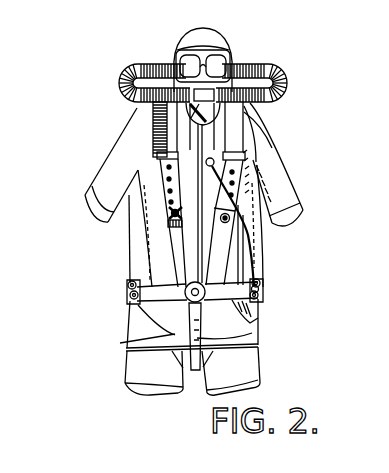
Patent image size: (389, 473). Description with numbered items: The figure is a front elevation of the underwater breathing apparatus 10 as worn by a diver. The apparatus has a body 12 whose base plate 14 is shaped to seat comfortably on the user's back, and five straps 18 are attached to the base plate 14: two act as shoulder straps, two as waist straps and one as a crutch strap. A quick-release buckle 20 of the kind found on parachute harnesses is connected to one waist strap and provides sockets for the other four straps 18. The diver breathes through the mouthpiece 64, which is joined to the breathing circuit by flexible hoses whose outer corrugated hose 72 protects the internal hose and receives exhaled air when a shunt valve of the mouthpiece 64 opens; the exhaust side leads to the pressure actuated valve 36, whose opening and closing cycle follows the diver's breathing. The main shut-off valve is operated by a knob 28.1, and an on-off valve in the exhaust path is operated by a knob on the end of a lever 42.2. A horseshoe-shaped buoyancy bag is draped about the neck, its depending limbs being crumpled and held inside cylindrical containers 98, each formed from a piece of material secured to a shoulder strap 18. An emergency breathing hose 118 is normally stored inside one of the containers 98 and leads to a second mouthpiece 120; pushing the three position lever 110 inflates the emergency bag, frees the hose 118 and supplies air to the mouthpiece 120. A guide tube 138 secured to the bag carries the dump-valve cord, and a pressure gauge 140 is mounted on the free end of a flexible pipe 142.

The breathing apparatus 10 is at (283, 104).
The body 12 is at (268, 254).
The base plate 14 is at (129, 241).
The straps 18 is at (175, 244).
The buckle 20 is at (135, 331).
The knob 28.1 is at (260, 300).
The pressure actuated valve 36 is at (253, 137).
The lever 42.2 is at (129, 298).
The mouthpiece 64 is at (163, 130).
The outer corrugated hose 72 is at (127, 74).
The cylindrical containers 98 is at (160, 170).
The three position lever 110 is at (126, 287).
The emergency breathing hose 118 is at (162, 102).
The mouthpiece 120 is at (171, 214).
The guide tube 138 is at (250, 110).
The pressure gauge 140 is at (262, 160).
The flexible pipe 142 is at (263, 237).